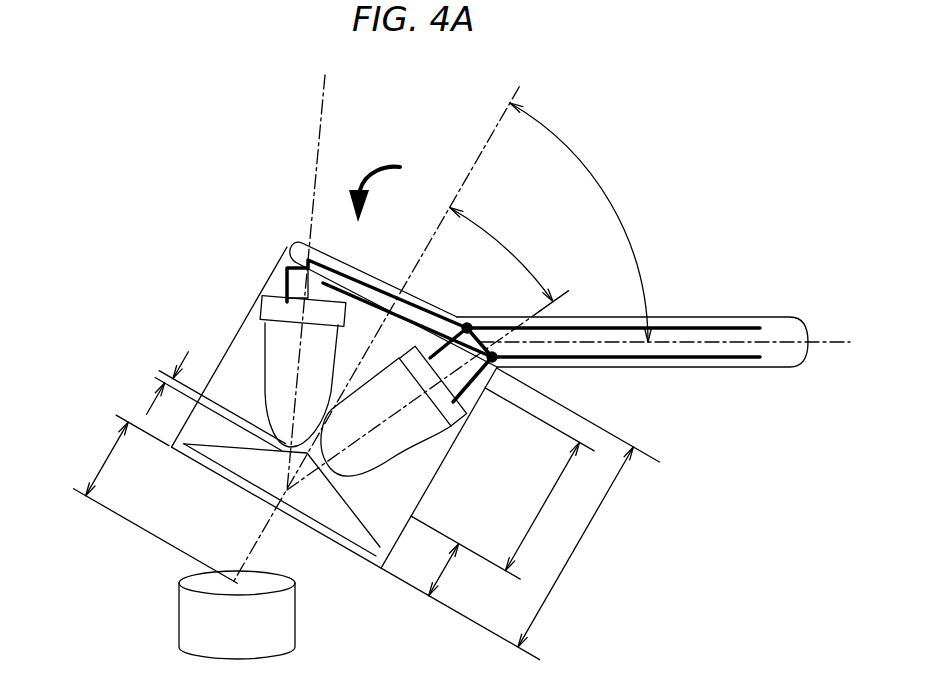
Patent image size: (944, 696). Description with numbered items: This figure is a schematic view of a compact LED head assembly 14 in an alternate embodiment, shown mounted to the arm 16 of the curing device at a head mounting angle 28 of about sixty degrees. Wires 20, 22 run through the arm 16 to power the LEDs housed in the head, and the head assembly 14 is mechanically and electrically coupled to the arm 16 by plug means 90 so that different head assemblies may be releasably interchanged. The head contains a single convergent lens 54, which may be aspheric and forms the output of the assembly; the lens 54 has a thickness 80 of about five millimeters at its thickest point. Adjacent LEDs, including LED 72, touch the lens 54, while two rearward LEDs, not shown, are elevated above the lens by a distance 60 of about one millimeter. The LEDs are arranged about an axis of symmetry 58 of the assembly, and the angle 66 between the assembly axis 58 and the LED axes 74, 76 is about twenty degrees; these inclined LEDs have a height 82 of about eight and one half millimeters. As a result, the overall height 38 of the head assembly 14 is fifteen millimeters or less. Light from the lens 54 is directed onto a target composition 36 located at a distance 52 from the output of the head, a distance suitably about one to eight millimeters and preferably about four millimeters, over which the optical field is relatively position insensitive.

The head assembly 14 is at (391, 187).
The arm 16 is at (694, 317).
The wire 20 is at (593, 317).
The wire 22 is at (705, 367).
The head mounting angle 28 is at (604, 188).
The target composition 36 is at (183, 622).
The height 38 is at (573, 556).
The distance 52 is at (108, 457).
The convergent lens 54 is at (325, 545).
The axis of symmetry 58 is at (498, 118).
The distance 60 is at (192, 342).
The angle 66 is at (503, 237).
The LED 72 is at (272, 352).
The LED axis 74 is at (321, 119).
The LED axis 76 is at (537, 310).
The lens thickness 80 is at (444, 570).
The LED height 82 is at (529, 530).
The plug means 90 is at (466, 326).